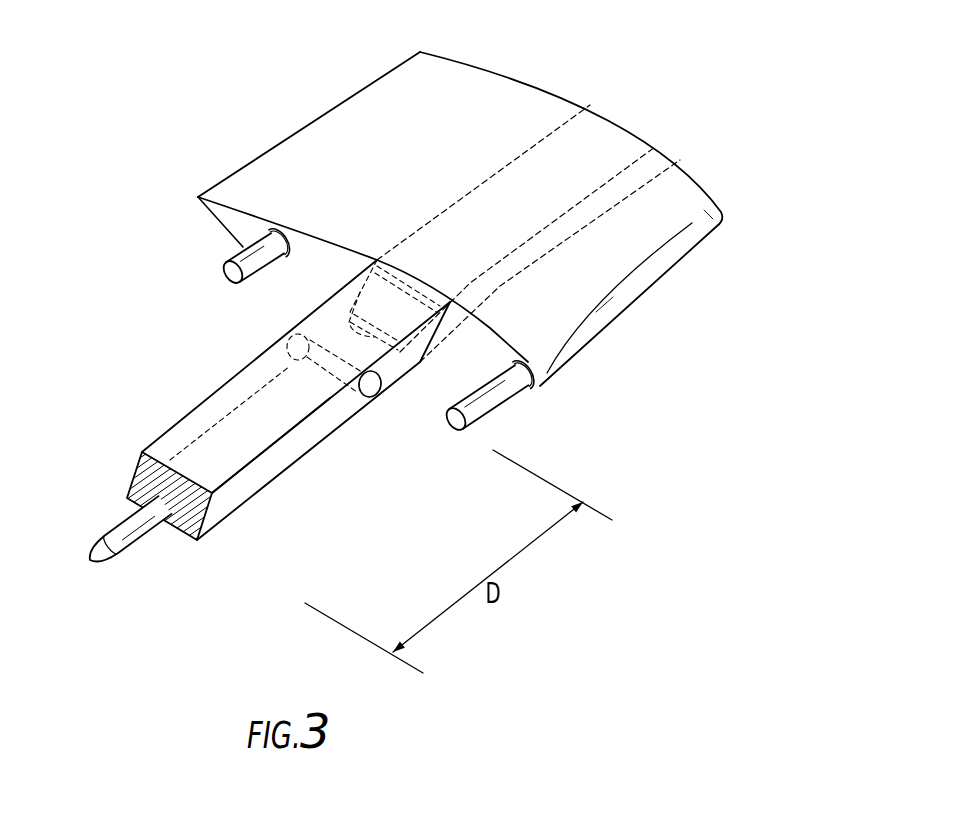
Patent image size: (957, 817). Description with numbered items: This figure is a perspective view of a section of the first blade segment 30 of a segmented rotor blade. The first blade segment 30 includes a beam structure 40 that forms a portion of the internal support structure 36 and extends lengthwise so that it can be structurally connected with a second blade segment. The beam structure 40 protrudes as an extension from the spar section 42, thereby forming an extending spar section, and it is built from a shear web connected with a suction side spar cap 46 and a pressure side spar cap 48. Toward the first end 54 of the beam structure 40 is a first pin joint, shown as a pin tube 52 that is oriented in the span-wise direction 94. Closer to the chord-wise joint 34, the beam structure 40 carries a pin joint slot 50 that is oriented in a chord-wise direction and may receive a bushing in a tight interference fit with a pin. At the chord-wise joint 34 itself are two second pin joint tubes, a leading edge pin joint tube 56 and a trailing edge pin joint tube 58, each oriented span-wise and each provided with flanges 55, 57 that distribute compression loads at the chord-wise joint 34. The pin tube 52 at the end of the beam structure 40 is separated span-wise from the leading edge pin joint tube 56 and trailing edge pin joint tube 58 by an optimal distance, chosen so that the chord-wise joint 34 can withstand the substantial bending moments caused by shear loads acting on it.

The first blade segment 30 is at (323, 117).
The chord-wise joint 34 is at (230, 225).
The internal support structure 36 is at (327, 527).
The beam structure 40 is at (173, 438).
The spar section 42 is at (641, 98).
The suction side spar cap 46 is at (127, 497).
The pressure side spar cap 48 is at (470, 239).
The pin joint slot 50 is at (399, 417).
The pin tube 52 is at (160, 580).
The first end 54 is at (240, 587).
The flange 55 is at (530, 363).
The leading edge pin joint tube 56 is at (453, 478).
The flange 57 is at (316, 194).
The trailing edge pin joint tube 58 is at (200, 307).
The span-wise direction 94 is at (273, 537).